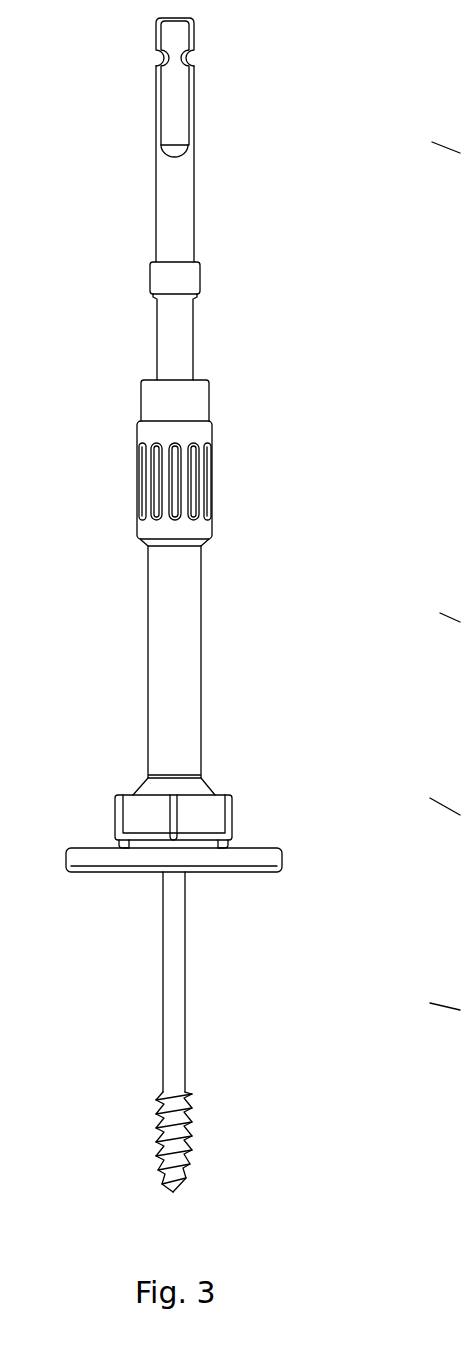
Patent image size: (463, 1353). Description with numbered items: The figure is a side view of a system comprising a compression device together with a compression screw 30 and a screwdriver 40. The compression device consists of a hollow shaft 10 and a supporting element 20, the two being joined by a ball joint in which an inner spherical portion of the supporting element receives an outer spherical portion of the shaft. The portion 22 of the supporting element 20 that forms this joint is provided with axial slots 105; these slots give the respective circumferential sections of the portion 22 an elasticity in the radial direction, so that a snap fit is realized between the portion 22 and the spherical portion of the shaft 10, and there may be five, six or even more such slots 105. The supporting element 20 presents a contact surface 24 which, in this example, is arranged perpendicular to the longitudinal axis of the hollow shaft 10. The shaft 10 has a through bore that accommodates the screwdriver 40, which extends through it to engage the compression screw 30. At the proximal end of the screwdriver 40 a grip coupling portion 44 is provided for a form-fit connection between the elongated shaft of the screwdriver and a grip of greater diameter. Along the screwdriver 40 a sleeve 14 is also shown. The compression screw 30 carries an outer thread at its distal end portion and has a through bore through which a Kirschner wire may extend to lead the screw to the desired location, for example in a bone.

The grip coupling portion 44 is at (175, 105).
The screwdriver 40 is at (173, 213).
The knurled grip sleeve 14 is at (193, 483).
The shaft 10 is at (178, 663).
The portion 22 is at (130, 810).
The axial slots 105 is at (177, 798).
The supporting element 20 is at (230, 842).
The contact surface 24 is at (242, 870).
The compression screw 30 is at (177, 1045).